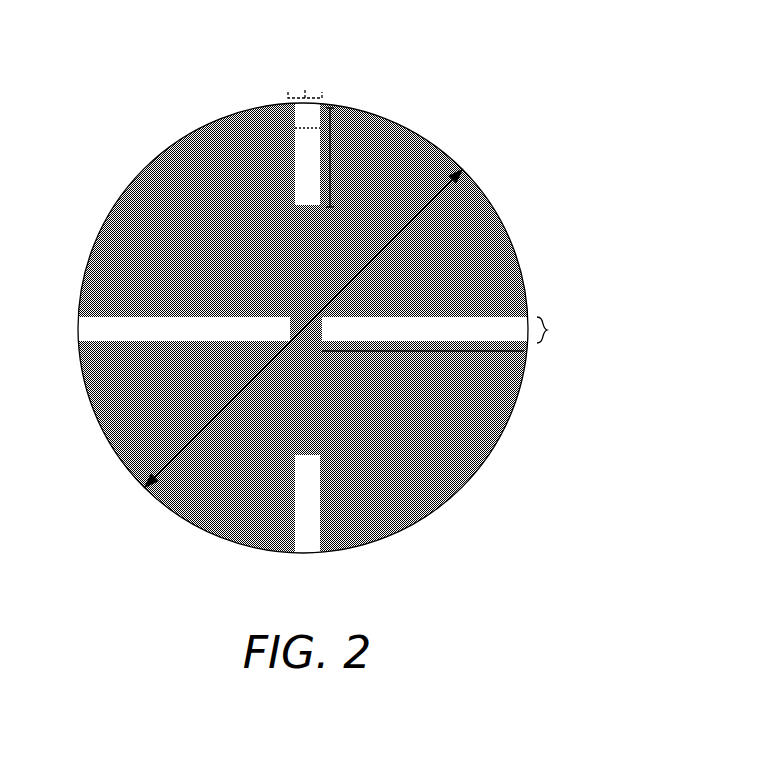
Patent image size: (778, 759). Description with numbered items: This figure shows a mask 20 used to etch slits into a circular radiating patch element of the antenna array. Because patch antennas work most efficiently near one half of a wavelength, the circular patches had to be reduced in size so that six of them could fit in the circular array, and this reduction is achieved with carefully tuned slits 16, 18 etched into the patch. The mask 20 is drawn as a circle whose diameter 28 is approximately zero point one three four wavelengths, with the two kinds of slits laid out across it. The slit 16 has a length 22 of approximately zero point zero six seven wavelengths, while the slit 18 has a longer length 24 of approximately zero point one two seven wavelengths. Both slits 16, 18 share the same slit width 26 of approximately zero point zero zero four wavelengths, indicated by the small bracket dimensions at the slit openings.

The slit 16 is at (290, 148).
The slit 18 is at (153, 341).
The mask 20 is at (316, 335).
The length of slit 22 is at (333, 160).
The length of slit 24 is at (422, 351).
The slit width 26 is at (307, 70).
The diameter of the mask 28 is at (337, 297).